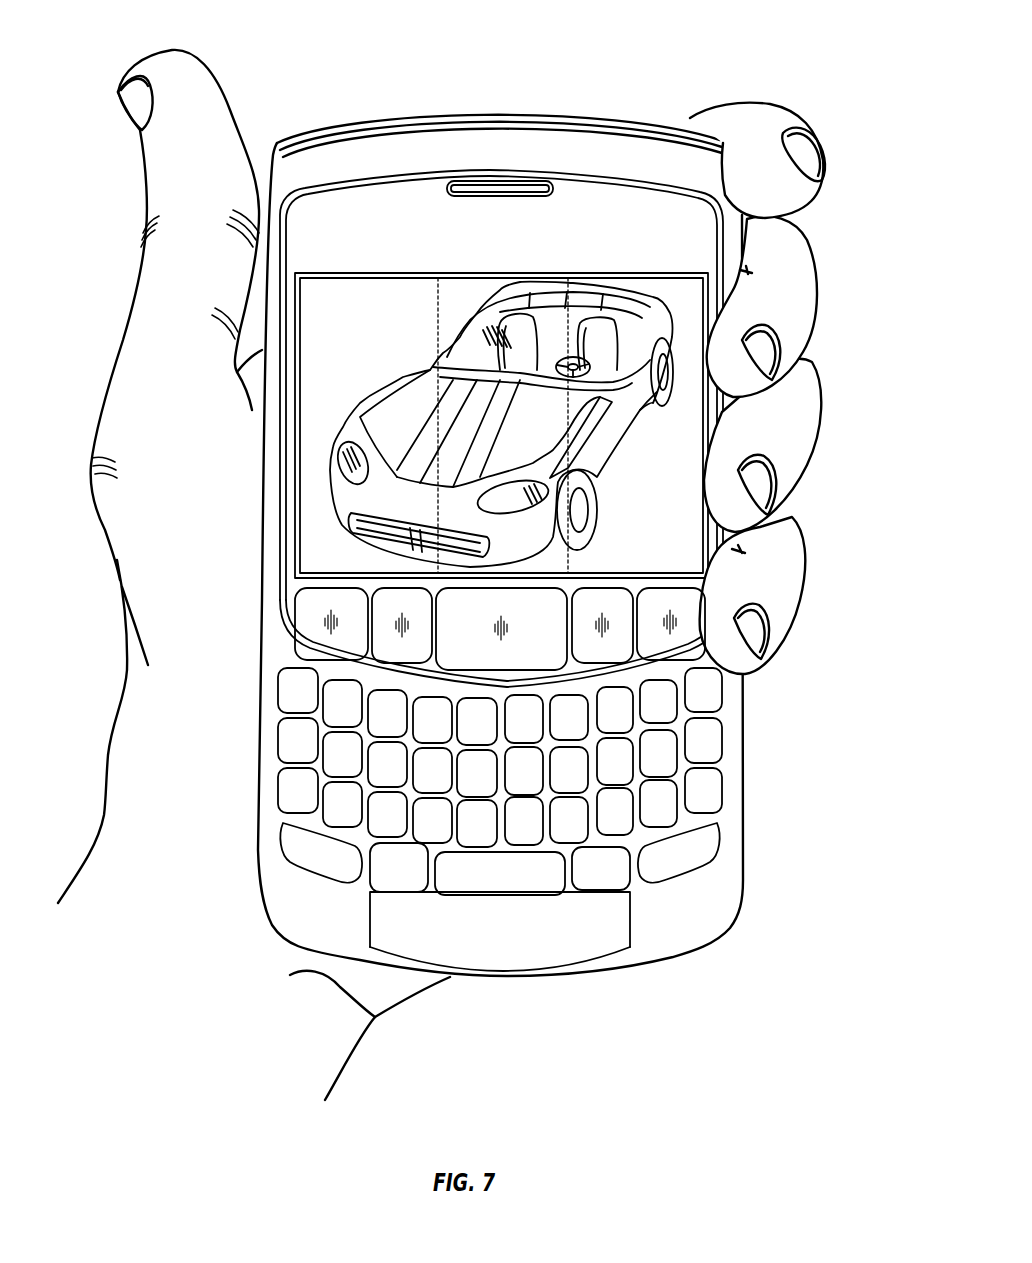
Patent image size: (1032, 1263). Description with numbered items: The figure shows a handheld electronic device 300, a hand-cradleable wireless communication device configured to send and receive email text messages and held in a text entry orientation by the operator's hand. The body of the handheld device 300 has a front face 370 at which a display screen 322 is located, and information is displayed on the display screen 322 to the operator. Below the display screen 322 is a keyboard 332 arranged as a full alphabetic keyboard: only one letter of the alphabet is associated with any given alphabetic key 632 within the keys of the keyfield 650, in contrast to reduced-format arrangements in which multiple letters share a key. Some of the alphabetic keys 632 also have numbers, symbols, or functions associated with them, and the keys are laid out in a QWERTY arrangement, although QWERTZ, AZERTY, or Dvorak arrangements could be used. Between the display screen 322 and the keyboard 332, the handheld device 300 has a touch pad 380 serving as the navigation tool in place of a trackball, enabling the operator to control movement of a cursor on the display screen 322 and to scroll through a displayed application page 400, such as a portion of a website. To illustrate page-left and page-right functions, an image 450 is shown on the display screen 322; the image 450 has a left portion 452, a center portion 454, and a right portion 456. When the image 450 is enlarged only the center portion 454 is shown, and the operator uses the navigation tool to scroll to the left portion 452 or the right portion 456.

The handheld electronic device 300 is at (677, 51).
The display screen 322 is at (411, 300).
The keyboard 332 is at (700, 904).
The front face 370 is at (729, 195).
The touch pad 380 is at (520, 663).
The application page 400 is at (672, 305).
The image 450 is at (326, 298).
The left portion 452 is at (352, 433).
The center portion 454 is at (459, 298).
The right portion 456 is at (659, 449).
The alphabetic key 632 is at (276, 745).
The keyfield 650 is at (276, 801).